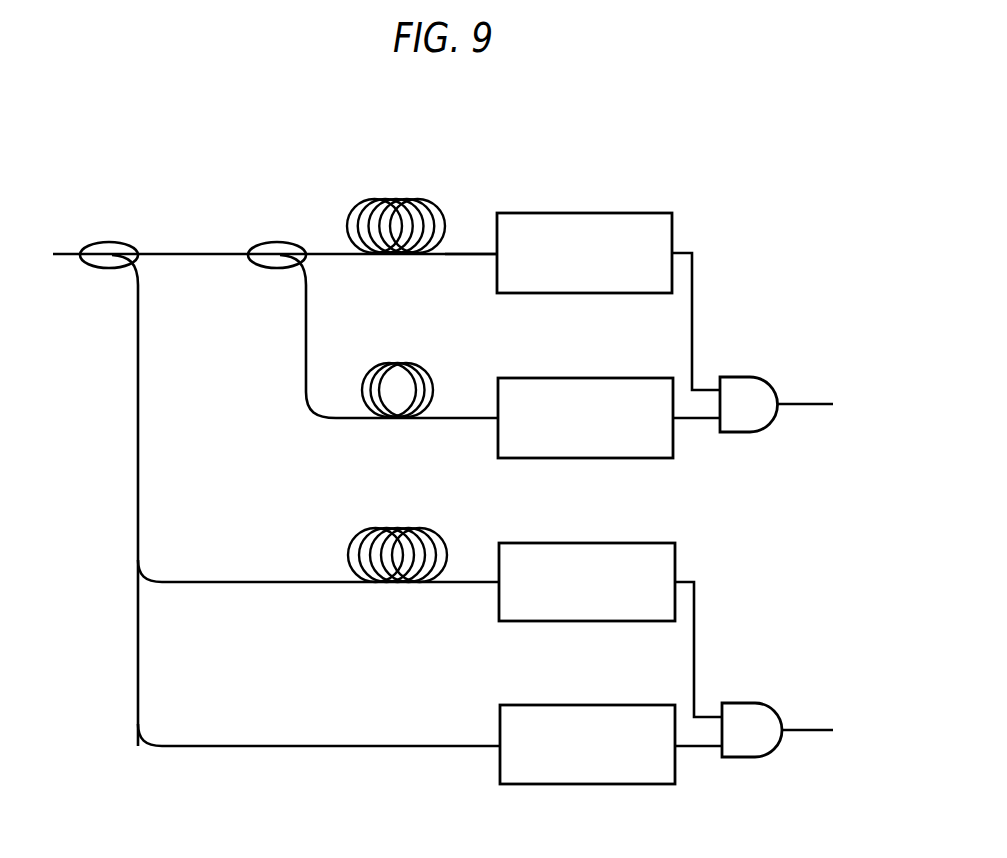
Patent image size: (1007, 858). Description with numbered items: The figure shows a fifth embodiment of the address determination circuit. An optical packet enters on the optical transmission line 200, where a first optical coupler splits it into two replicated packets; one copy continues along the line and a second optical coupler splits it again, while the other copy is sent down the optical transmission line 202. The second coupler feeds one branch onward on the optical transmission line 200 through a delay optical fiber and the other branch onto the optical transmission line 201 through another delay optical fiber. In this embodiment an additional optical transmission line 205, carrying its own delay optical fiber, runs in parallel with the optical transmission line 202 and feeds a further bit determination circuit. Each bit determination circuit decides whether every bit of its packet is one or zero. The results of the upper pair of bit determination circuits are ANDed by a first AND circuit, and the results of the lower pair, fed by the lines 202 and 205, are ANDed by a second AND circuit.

The optical transmission line 200 is at (475, 252).
The optical transmission line 201 is at (306, 392).
The optical transmission line 202 is at (198, 744).
The optical transmission line 205 is at (198, 580).